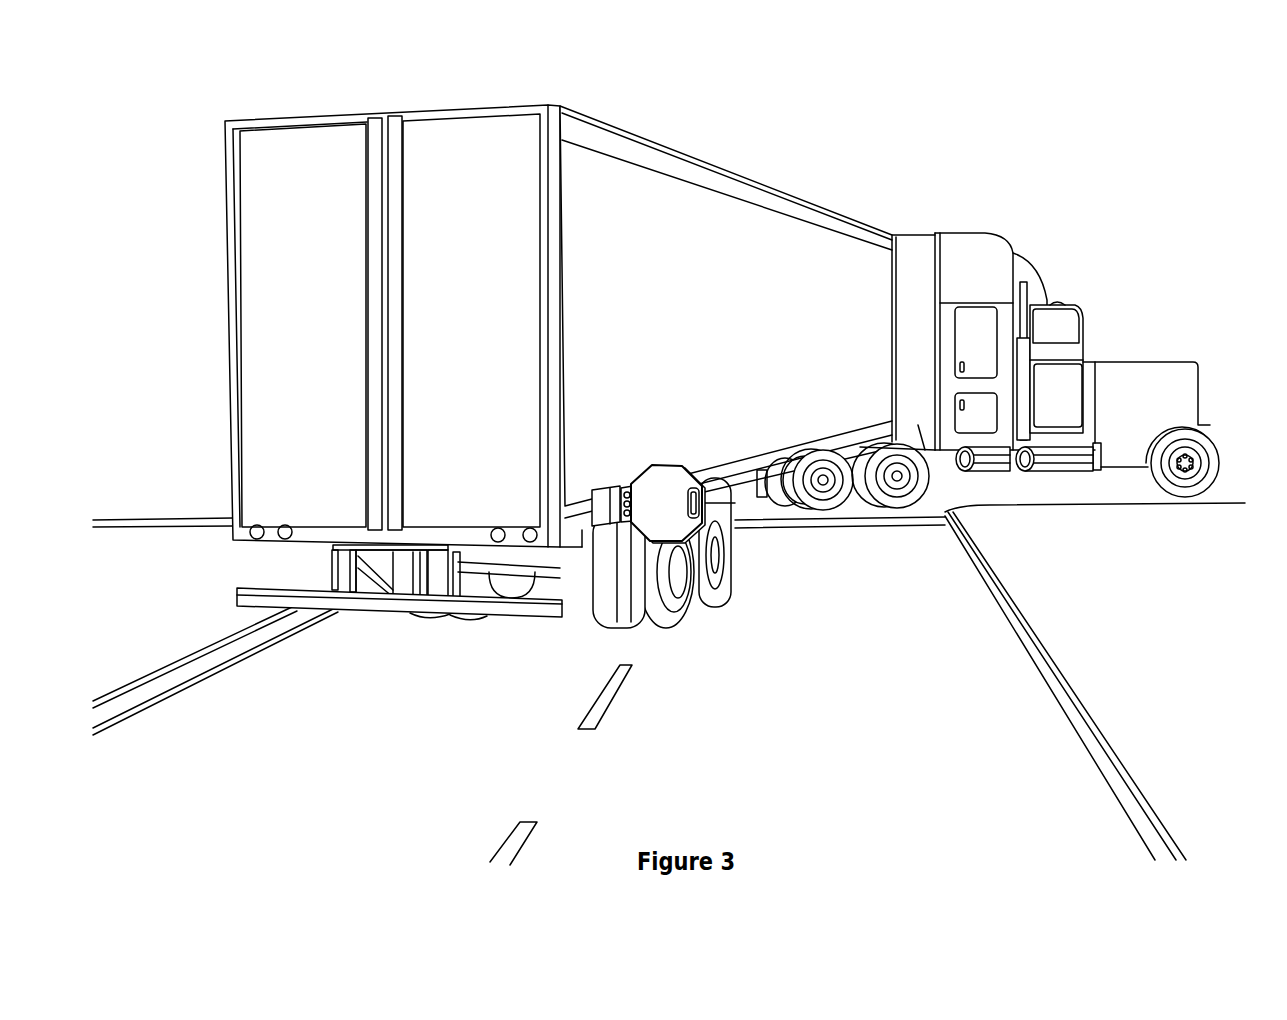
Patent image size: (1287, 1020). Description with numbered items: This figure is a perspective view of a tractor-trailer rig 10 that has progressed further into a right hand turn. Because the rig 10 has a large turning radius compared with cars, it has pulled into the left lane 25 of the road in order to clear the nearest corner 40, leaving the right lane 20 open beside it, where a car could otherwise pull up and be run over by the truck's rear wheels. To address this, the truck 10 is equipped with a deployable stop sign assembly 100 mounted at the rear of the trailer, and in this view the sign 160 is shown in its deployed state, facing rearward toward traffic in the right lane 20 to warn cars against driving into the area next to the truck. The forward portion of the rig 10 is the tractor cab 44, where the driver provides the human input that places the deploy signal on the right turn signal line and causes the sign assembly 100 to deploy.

The tractor-trailer rig 10 is at (686, 100).
The tractor cab 44 is at (1088, 320).
The deployable stop sign assembly 100 is at (663, 479).
The sign 160 is at (694, 466).
The left lane 25 is at (388, 666).
The right lane 20 is at (815, 688).
The corner 40 is at (1066, 688).